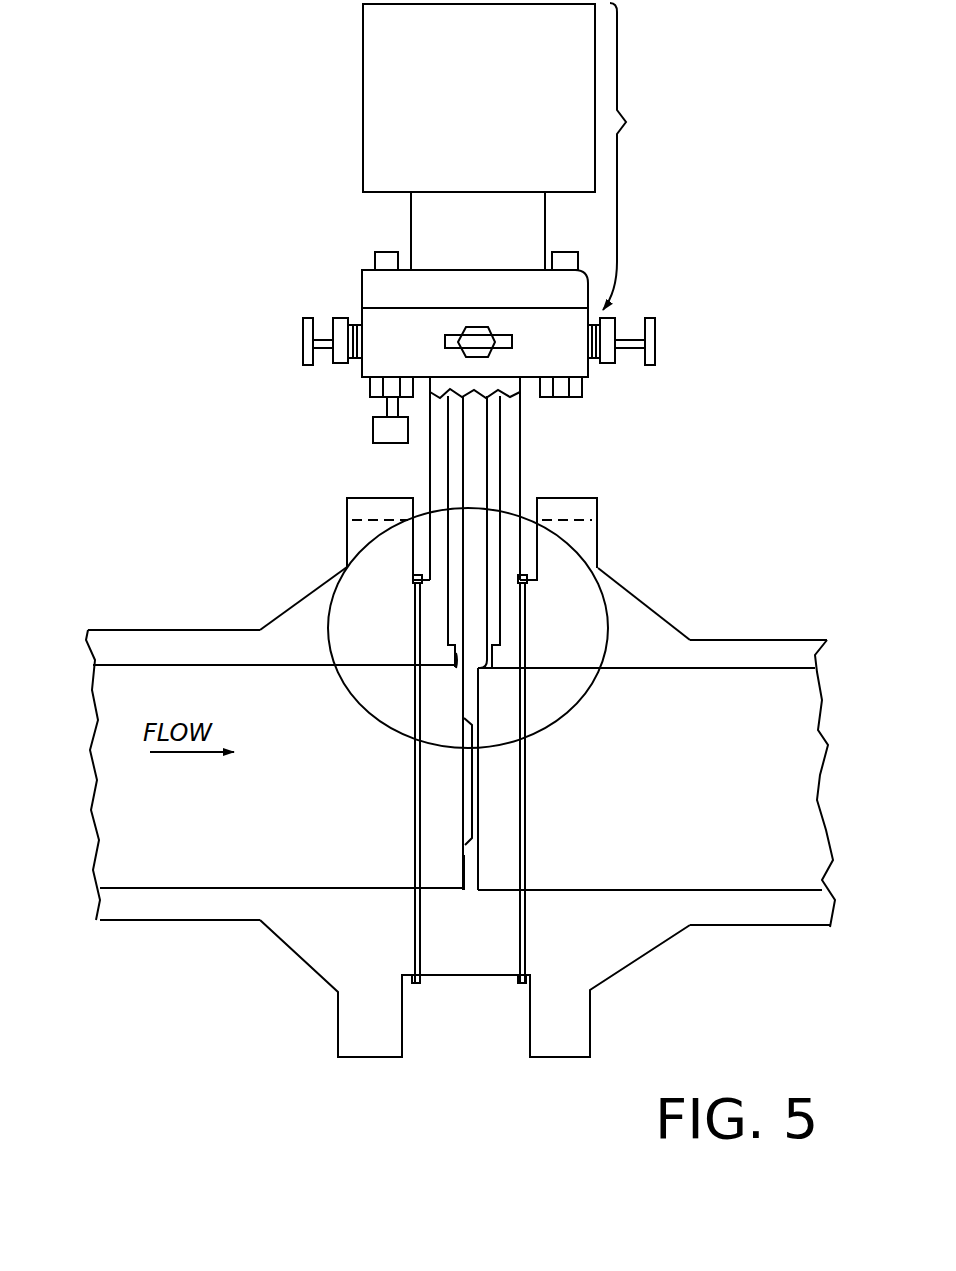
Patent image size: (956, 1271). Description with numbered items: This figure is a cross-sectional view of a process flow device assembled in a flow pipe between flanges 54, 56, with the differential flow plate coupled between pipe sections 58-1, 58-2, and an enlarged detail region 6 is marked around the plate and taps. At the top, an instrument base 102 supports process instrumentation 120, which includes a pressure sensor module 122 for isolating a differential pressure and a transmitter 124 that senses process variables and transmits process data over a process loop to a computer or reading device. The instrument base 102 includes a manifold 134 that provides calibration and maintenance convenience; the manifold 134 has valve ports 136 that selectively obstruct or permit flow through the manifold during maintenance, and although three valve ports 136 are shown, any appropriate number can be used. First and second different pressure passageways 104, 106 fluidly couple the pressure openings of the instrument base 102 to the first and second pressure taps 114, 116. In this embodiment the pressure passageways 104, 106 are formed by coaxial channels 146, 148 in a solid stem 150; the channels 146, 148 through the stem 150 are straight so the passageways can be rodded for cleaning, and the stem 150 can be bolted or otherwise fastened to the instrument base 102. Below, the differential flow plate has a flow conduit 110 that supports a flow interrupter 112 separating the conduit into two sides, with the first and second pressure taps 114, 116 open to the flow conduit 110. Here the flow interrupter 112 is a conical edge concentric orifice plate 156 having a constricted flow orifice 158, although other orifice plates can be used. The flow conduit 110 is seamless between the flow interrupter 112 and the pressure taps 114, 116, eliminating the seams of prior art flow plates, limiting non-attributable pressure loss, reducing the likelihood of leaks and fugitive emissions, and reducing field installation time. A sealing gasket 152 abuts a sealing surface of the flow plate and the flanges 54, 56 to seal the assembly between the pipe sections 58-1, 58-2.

The enlarged detail region 6 is at (590, 546).
The flange 54 is at (291, 606).
The flange 56 is at (656, 609).
The pipe section 58-1 is at (156, 627).
The pipe section 58-2 is at (741, 631).
The instrument base 102 is at (604, 314).
The first pressure passageway 104 is at (455, 535).
The second pressure passageway 106 is at (497, 535).
The flow conduit 110 is at (512, 669).
The flow interrupter 112 is at (485, 855).
The first pressure tap 114 is at (456, 668).
The second pressure tap 116 is at (485, 669).
The process instrumentation 120 is at (622, 62).
The pressure sensor module 122 is at (412, 210).
The transmitter 124 is at (368, 86).
The manifold 134 is at (406, 334).
The valve ports 136 is at (650, 333).
The coaxial channel 146 is at (452, 462).
The coaxial channel 148 is at (494, 450).
The solid stem 150 is at (527, 418).
The sealing gasket 152 is at (415, 617).
The orifice plate 156 is at (487, 878).
The constricted flow orifice 158 is at (480, 806).